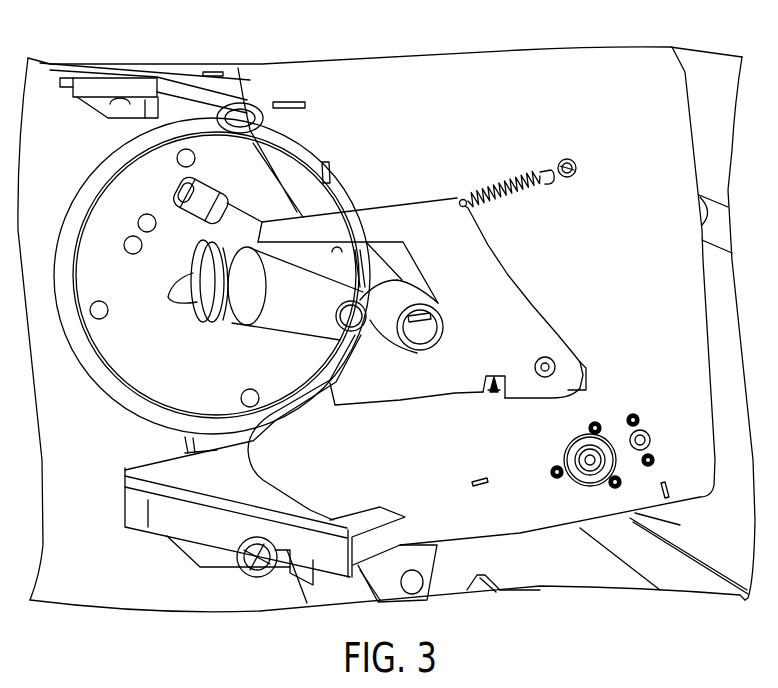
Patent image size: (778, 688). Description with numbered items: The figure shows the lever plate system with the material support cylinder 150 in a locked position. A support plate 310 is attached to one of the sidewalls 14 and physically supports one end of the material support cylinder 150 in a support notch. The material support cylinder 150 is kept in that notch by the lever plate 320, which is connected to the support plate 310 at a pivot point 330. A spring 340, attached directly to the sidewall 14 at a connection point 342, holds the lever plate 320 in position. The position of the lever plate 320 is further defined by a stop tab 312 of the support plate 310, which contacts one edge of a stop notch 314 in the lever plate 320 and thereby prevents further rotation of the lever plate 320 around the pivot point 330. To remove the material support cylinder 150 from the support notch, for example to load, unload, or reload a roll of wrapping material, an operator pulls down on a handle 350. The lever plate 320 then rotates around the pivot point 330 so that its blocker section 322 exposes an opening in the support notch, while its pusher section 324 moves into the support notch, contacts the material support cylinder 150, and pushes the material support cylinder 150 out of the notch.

The sidewall 14 is at (490, 63).
The material support cylinder 150 is at (287, 308).
The support plate 310 is at (407, 265).
The stop tab 312 is at (485, 394).
The stop notch 314 is at (497, 394).
The lever plate 320 is at (518, 322).
The blocker section 322 is at (377, 367).
The pusher section 324 is at (455, 310).
The pivot point 330 is at (536, 366).
The spring 340 is at (502, 180).
The connection point 342 is at (567, 159).
The handle 350 is at (193, 197).